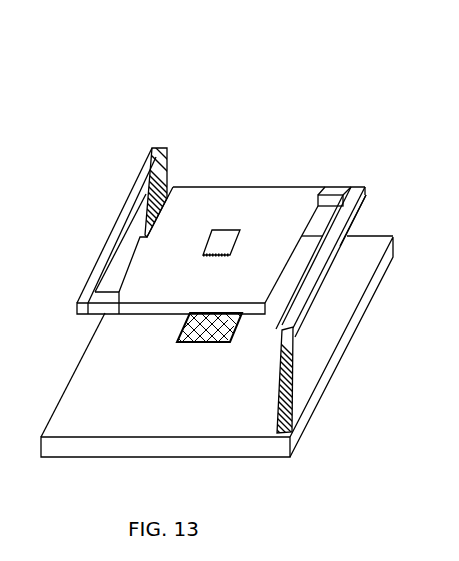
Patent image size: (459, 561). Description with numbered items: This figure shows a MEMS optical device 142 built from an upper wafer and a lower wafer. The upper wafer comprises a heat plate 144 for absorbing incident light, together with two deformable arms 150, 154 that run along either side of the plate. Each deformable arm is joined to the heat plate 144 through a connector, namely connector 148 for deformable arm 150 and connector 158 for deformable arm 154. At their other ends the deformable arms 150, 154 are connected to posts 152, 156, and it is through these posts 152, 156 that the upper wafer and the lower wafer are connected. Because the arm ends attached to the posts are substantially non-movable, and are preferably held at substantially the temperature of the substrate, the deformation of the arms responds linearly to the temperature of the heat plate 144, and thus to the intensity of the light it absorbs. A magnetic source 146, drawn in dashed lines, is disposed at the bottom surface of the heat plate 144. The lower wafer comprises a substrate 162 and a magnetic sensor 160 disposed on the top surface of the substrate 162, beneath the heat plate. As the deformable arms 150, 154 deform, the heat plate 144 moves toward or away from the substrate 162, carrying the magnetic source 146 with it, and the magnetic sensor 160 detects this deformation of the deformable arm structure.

The MEMS optical device 142 is at (281, 121).
The heat plate 144 is at (202, 196).
The magnetic source 146 is at (223, 237).
The connector 148 is at (332, 190).
The deformable arm 150 is at (350, 226).
The post 152 is at (296, 386).
The deformable arm 154 is at (134, 190).
The post 156 is at (165, 170).
The connector 158 is at (103, 308).
The magnetic sensor 160 is at (188, 345).
The substrate 162 is at (232, 452).